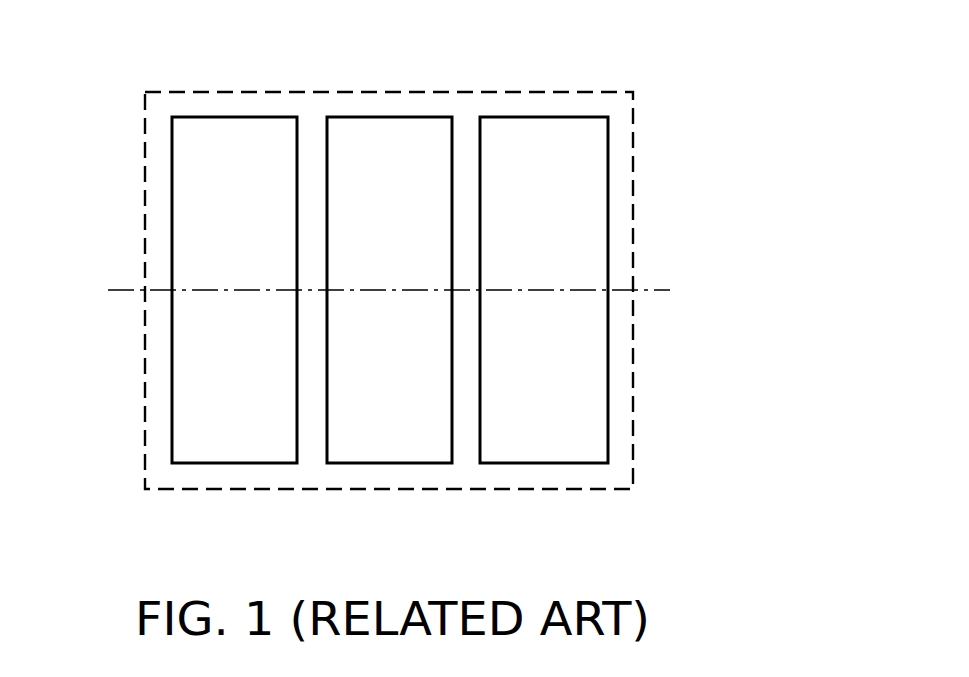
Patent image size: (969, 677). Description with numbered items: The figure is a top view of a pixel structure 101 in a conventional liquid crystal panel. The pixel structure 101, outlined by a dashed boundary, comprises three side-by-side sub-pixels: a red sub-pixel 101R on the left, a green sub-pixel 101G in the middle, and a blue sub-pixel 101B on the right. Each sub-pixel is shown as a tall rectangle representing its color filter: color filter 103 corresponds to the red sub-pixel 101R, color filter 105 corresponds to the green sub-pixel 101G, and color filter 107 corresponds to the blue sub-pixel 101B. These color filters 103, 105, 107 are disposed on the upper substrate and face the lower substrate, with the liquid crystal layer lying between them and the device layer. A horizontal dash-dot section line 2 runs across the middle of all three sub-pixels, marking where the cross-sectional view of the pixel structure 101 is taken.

The pixel structure 101 is at (606, 92).
The red sub-pixel 101R is at (233, 463).
The green sub-pixel 101G is at (389, 463).
The blue sub-pixel 101B is at (543, 463).
The color filter 103 is at (233, 130).
The color filter 105 is at (389, 130).
The color filter 107 is at (543, 130).
The section line 2- 2 is at (78, 290).